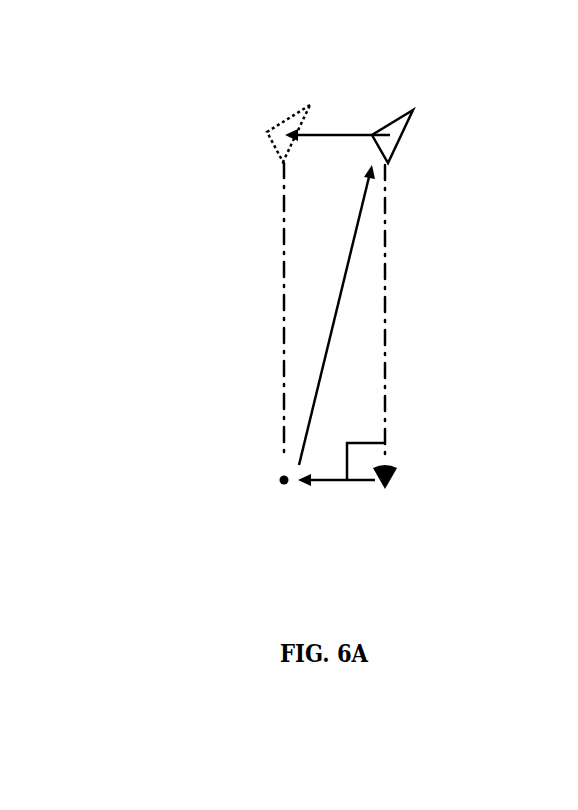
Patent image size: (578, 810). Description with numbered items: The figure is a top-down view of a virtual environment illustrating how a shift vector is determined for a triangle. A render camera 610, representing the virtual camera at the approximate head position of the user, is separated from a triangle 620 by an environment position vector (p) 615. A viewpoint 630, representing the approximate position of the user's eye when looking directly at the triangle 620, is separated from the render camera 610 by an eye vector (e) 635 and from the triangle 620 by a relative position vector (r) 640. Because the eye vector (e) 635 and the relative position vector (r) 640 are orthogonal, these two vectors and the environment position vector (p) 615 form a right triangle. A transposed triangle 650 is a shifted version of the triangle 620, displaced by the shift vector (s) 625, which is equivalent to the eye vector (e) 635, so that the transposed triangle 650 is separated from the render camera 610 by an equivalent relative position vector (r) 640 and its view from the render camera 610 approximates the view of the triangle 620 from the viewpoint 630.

The render camera 610 is at (268, 480).
The environment position vector (p) 615 is at (355, 271).
The triangle 620 is at (408, 152).
The shift vector (s) 625 is at (333, 125).
The viewpoint 630 is at (402, 488).
The eye vector (e) 635 is at (335, 488).
The relative position vector (r) 640 is at (450, 350).
The transposed triangle 650 is at (270, 153).